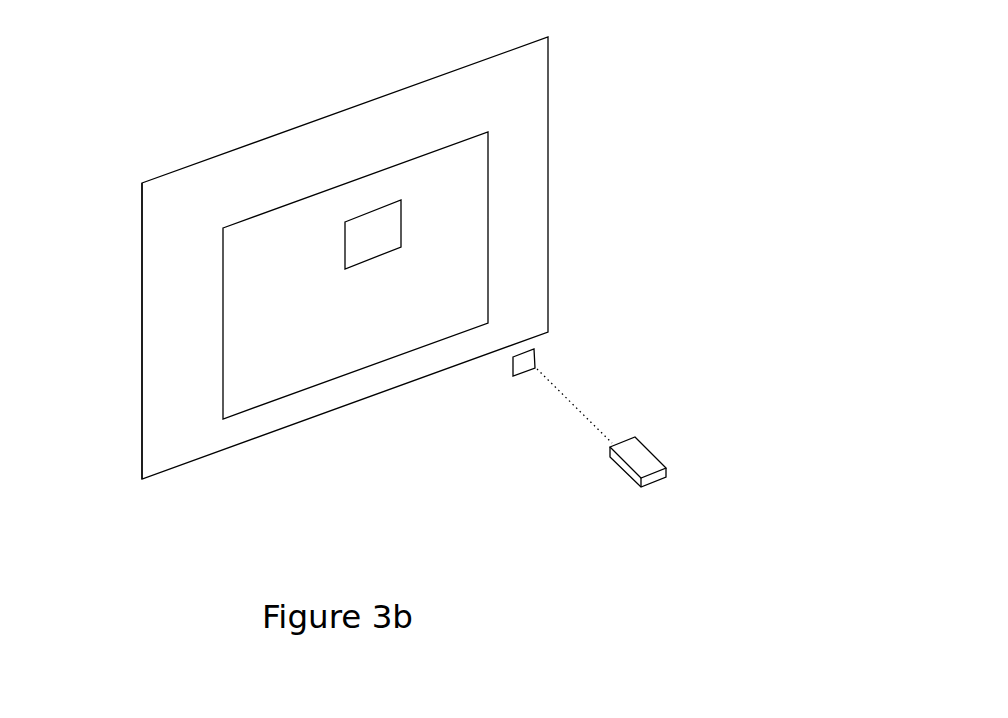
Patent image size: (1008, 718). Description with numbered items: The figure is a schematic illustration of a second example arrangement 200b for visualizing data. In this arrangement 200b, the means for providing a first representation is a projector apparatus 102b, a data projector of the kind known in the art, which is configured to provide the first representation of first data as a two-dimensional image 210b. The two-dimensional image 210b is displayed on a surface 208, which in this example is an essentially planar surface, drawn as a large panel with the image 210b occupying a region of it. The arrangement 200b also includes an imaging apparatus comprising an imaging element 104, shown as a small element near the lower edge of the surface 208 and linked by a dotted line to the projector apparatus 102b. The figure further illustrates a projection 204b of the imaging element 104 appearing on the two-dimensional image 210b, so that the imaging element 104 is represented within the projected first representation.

The second example arrangement 200b is at (268, 58).
The surface 208 is at (142, 262).
The two-dimensional image 210b is at (292, 398).
The projection of the imaging element 204b is at (345, 242).
The imaging element 104 is at (534, 361).
The projector apparatus 102b is at (663, 458).